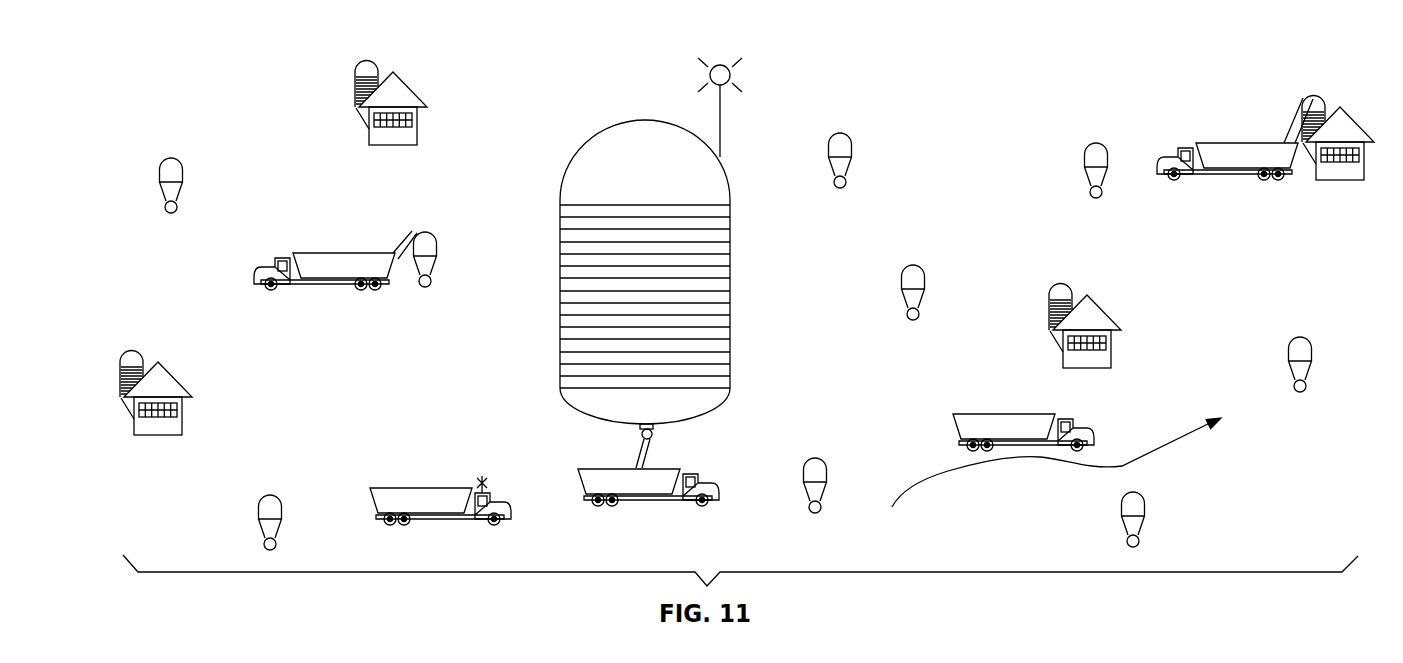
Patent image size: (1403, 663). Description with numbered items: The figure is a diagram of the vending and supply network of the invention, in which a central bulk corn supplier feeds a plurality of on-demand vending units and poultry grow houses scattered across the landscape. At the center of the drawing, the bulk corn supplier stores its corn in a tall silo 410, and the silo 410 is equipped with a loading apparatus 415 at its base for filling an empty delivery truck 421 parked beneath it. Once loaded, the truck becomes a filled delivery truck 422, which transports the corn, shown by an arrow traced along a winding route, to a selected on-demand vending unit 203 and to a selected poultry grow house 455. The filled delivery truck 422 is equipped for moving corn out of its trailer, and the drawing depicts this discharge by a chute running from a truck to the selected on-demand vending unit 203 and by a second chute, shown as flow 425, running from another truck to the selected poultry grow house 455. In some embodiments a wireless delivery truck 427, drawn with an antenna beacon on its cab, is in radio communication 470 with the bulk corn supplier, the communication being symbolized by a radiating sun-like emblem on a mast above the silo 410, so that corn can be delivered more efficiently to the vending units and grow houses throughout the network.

The selected on-demand vending unit 203 is at (447, 249).
The silo 410 is at (628, 165).
The loading apparatus 415 is at (640, 433).
The empty delivery truck 421 is at (662, 469).
The filled delivery truck 422 is at (1068, 414).
The flow 425 is at (1292, 125).
The wireless delivery truck 427 is at (443, 488).
The selected poultry grow house 455 is at (1366, 104).
The radio communication 470 is at (731, 75).